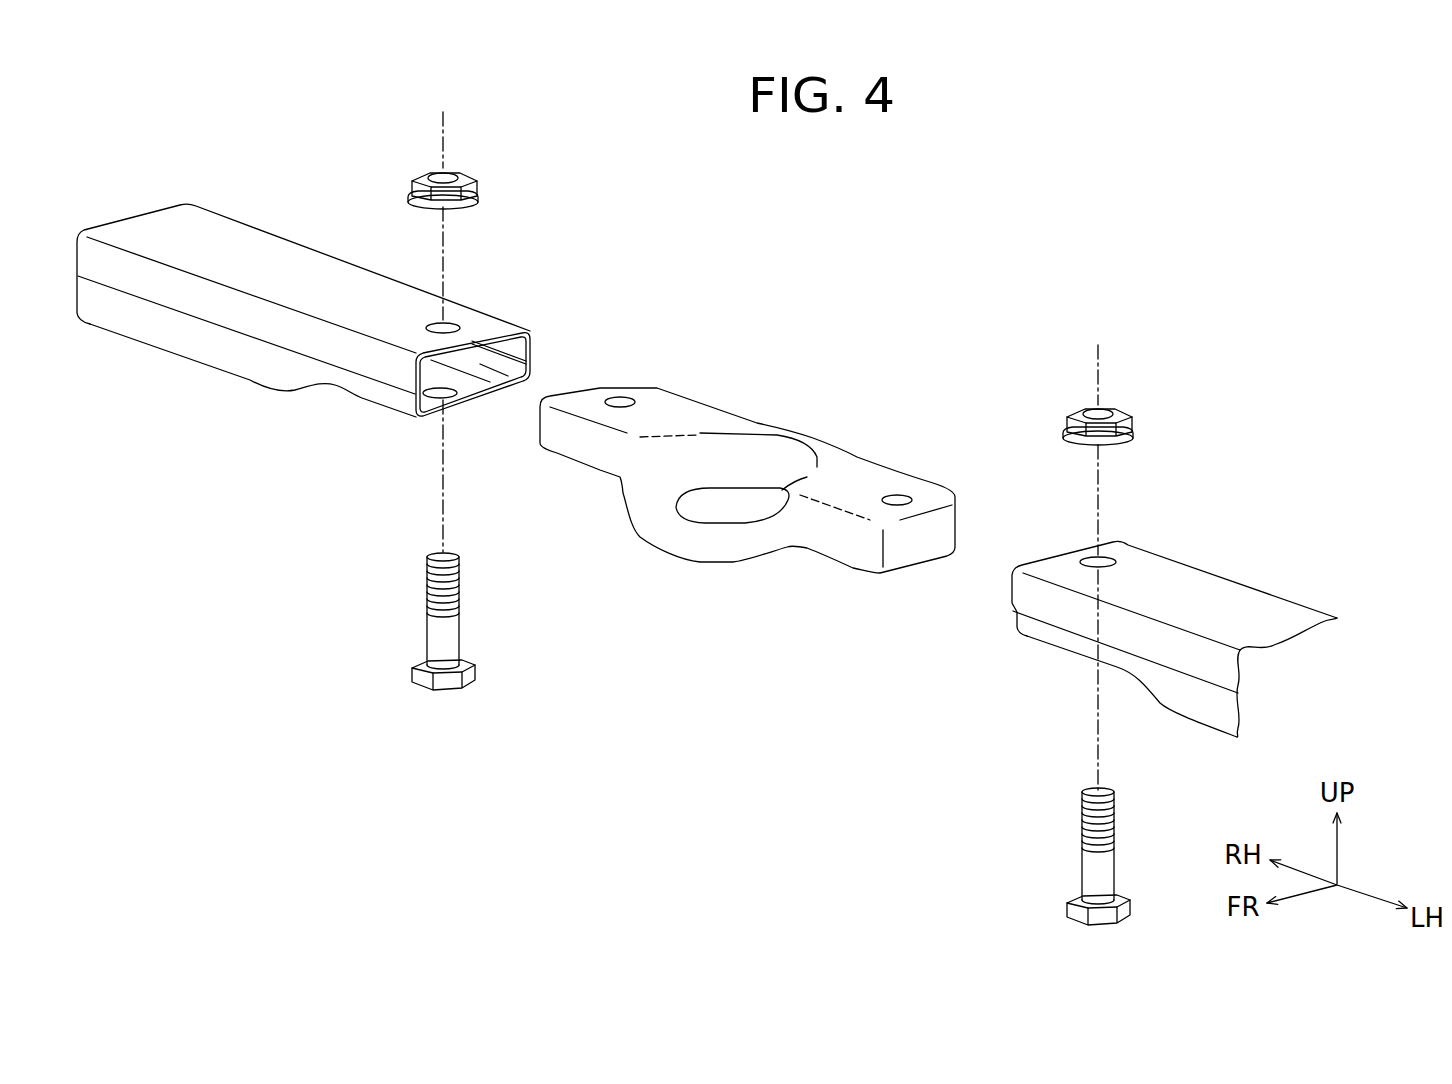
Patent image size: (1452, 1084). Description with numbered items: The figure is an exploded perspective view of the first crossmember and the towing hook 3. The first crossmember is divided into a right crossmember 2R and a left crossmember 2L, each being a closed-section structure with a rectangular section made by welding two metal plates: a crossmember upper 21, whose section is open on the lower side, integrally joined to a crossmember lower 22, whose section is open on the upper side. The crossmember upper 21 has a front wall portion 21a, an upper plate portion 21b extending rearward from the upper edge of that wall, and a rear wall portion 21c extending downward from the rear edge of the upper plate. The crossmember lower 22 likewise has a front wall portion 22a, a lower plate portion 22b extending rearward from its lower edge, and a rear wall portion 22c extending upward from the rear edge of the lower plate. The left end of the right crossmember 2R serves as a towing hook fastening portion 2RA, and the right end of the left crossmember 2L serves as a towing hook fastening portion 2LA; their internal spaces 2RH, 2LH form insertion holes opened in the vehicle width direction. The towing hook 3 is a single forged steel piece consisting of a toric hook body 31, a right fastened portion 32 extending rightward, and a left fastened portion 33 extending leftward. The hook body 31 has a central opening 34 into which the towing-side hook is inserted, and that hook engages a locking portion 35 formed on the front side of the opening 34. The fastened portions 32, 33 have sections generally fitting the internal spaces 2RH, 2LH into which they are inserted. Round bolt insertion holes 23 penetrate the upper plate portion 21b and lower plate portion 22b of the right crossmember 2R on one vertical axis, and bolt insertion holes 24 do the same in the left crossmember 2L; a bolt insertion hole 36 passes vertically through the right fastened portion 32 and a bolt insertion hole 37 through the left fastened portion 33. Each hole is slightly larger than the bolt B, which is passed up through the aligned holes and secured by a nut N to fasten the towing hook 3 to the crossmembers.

The right crossmember 2R is at (246, 222).
The left crossmember 2L is at (1243, 587).
The crossmember upper 21 is at (339, 349).
The front wall portion 21a is at (217, 307).
The upper plate portion 21b is at (303, 263).
The rear wall portion 21c is at (533, 351).
The crossmember lower 22 is at (243, 355).
The front wall portion 22a is at (268, 370).
The lower plate portion 22b is at (437, 410).
The rear wall portion 22c is at (500, 372).
The bolt insertion holes 23 is at (432, 320).
The bolt insertion holes 24 is at (1090, 553).
The towing hook fastening portion 2RA is at (467, 322).
The internal space 2RH is at (483, 355).
The towing hook fastening portion 2LA is at (1132, 555).
The internal space 2LH is at (1012, 593).
The towing hook 3 is at (830, 430).
The hook body 31 is at (750, 457).
The right fastened portion 32 is at (652, 392).
The left fastened portion 33 is at (928, 497).
The opening 34 is at (727, 512).
The locking portion 35 is at (675, 542).
The bolt insertion hole 36 is at (621, 396).
The bolt insertion hole 37 is at (900, 496).
The nut N is at (465, 172).
The bolt B is at (462, 630).